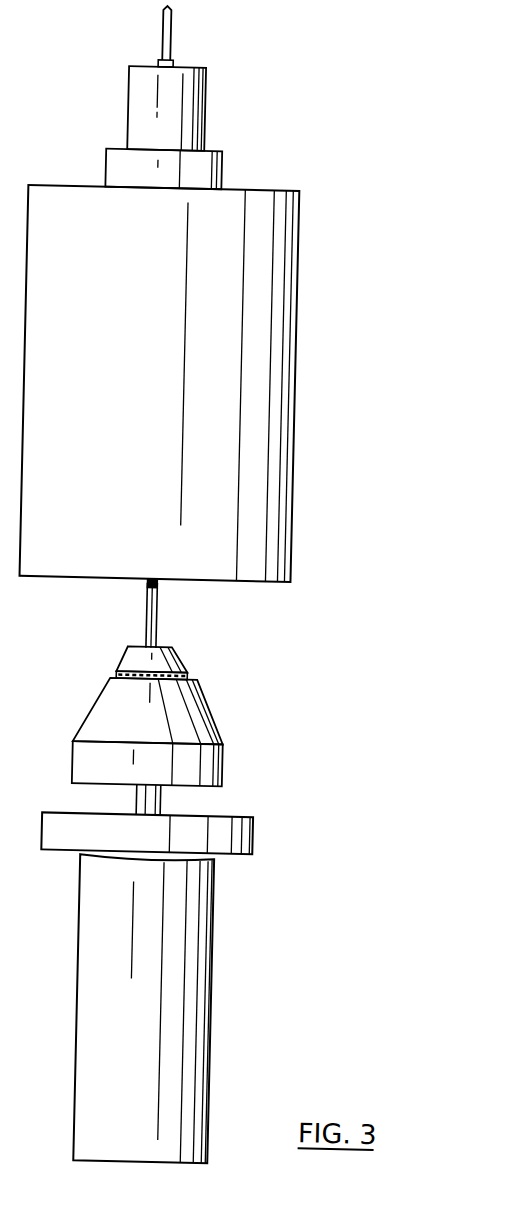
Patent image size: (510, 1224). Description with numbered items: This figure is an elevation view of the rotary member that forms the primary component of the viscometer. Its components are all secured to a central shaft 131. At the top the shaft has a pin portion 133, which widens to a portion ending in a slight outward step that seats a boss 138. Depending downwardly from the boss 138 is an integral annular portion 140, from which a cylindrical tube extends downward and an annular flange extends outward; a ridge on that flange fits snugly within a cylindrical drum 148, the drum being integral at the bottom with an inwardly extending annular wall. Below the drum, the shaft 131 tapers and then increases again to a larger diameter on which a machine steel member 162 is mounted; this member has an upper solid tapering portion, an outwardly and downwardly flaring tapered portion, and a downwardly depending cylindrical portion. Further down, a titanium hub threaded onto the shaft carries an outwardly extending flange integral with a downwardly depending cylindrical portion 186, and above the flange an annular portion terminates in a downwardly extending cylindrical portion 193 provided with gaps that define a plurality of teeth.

The pin portion 133 is at (159, 38).
The boss 138 is at (192, 117).
The annular portion 140 is at (212, 172).
The cylindrical drum 148 is at (290, 325).
The central shaft 131 is at (160, 612).
The machine steel member 162 is at (210, 712).
The cylindrical portion 193 is at (258, 836).
The cylindrical portion 186 is at (222, 1029).